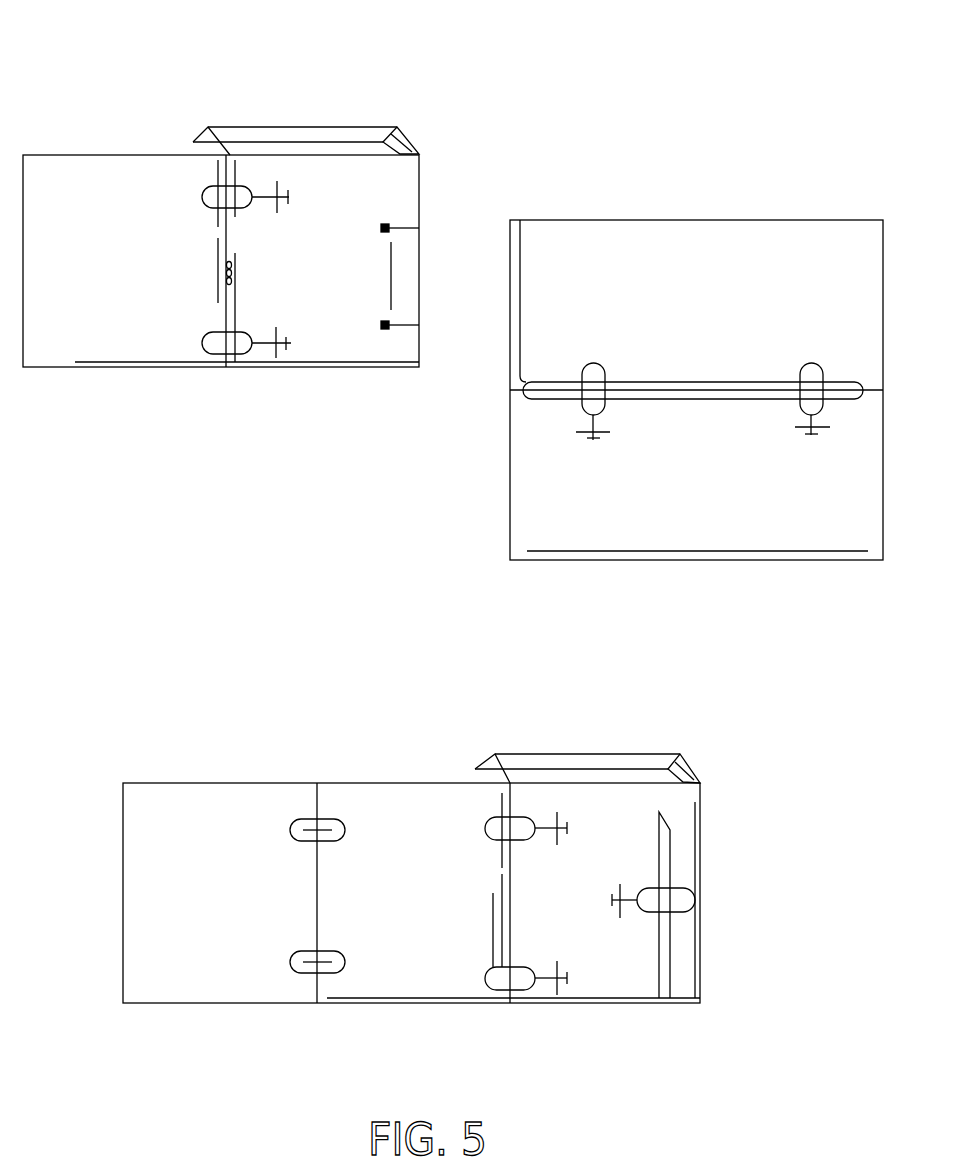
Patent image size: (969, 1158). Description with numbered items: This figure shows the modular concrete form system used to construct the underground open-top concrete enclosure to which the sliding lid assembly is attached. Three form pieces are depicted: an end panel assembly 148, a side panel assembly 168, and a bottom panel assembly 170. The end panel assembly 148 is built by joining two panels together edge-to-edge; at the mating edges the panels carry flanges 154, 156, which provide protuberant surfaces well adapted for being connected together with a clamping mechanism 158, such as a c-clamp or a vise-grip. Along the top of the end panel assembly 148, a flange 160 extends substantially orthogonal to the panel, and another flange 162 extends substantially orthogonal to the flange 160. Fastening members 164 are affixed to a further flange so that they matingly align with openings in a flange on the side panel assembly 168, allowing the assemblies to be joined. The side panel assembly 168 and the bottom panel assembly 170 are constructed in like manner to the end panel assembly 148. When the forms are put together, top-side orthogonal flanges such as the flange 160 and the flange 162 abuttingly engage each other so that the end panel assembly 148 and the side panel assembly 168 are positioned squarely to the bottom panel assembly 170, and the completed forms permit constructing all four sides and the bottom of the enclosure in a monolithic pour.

The end panel assembly 148 is at (252, 217).
The flange 154 is at (217, 264).
The flange 156 is at (237, 263).
The clamping mechanism 158 is at (288, 197).
The flange 160 is at (400, 133).
The flange 162 is at (352, 143).
The fastening members 164 is at (402, 229).
The side panel assembly 168 is at (176, 746).
The bottom panel assembly 170 is at (595, 167).